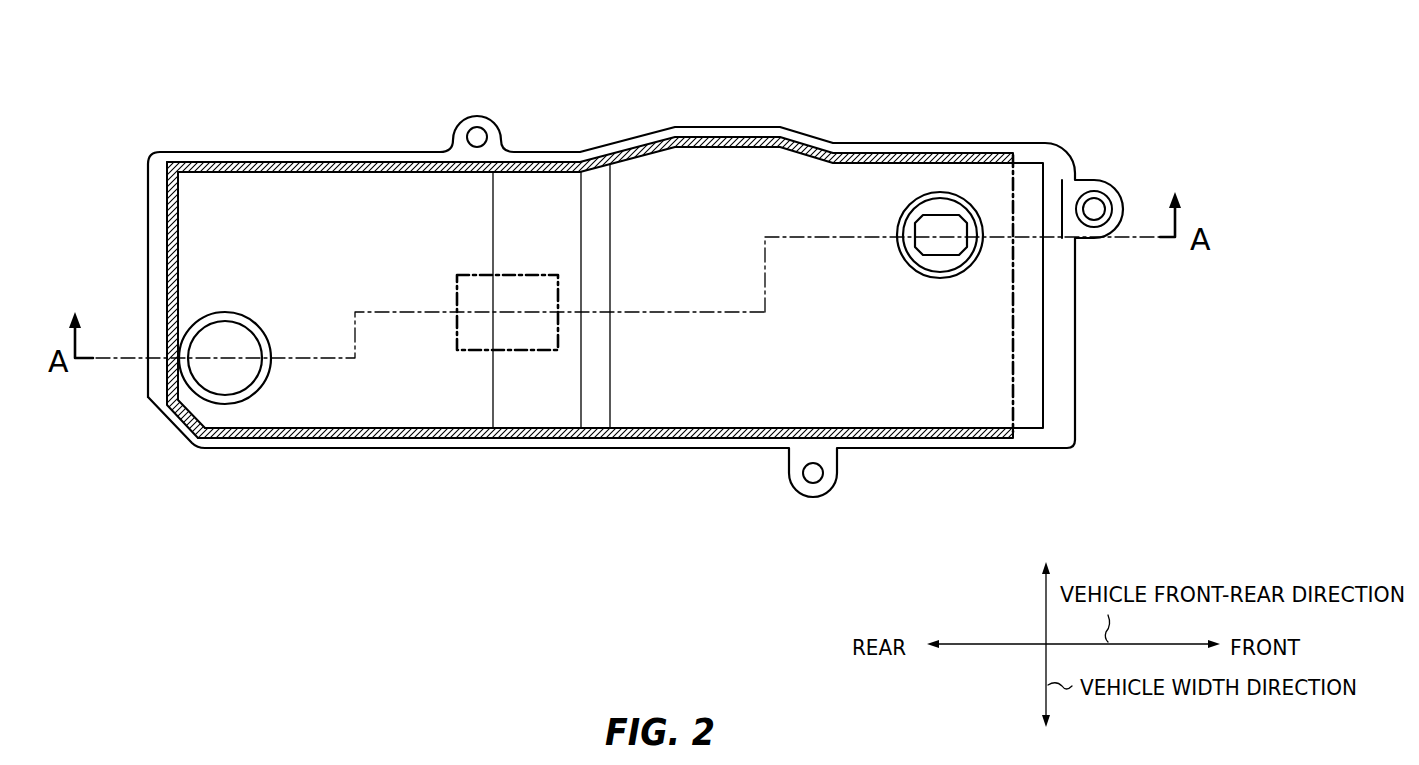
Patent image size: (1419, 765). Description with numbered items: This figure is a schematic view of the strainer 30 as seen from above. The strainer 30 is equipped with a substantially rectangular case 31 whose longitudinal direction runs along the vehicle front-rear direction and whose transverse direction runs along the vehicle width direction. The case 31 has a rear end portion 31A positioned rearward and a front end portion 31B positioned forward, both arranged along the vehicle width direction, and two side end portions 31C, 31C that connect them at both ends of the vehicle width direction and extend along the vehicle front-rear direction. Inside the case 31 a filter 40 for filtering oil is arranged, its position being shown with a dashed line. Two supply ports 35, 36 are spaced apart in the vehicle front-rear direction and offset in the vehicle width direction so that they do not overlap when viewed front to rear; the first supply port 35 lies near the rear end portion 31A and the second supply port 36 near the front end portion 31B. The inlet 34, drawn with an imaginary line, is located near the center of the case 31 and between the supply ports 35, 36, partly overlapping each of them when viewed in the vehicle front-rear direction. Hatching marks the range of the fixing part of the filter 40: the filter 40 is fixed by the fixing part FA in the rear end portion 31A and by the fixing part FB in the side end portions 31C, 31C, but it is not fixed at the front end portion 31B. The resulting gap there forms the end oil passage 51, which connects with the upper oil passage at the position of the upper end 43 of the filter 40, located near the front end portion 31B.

The strainer 30 is at (1118, 146).
The case 31 is at (594, 144).
The rear end portion 31A is at (167, 263).
The front end portion 31B is at (1043, 285).
The side end portions 31C is at (697, 134).
The inlet 34 is at (457, 276).
The supply port 35 is at (251, 316).
The supply port 36 is at (898, 205).
The filter 40 is at (323, 176).
The upper end 43 is at (1013, 355).
The end oil passage 51 is at (1031, 191).
The fixing part FA is at (167, 197).
The fixing part FB is at (850, 150).